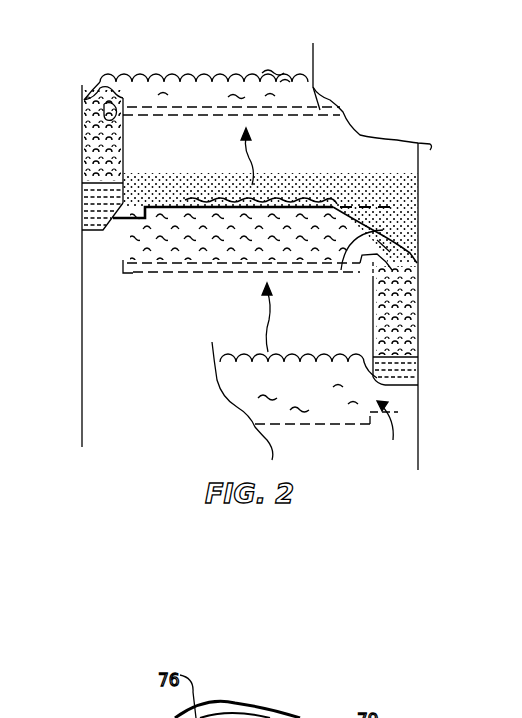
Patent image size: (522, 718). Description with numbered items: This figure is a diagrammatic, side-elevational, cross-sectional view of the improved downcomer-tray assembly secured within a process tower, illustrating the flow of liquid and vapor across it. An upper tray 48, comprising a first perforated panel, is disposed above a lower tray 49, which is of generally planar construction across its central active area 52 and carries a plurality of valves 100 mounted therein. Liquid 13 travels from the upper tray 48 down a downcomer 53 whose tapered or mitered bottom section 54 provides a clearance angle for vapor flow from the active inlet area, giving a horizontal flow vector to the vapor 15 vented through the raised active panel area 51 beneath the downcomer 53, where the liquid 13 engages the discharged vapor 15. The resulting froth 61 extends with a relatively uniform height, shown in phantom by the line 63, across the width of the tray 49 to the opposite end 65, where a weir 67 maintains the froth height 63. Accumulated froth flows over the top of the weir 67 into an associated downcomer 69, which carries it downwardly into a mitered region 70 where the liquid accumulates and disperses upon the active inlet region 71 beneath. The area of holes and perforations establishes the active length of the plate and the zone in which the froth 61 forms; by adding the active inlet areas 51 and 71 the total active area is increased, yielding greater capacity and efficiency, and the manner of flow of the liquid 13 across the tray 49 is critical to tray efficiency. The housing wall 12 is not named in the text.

The housing wall 12 is at (420, 183).
The liquid 13 is at (95, 207).
The vapor 15 is at (250, 148).
The upper tray 48 is at (322, 88).
The lower tray 49 is at (130, 273).
The raised active panel area 51 is at (113, 249).
The central active area 52 is at (168, 281).
The downcomer 53 is at (112, 100).
The tapered bottom section 54 is at (113, 208).
The froth 61 is at (276, 72).
The froth height line 63 is at (192, 197).
The opposite end 65 is at (385, 229).
The weir 67 is at (392, 259).
The associated downcomer 69 is at (373, 327).
The mitered region 70 is at (378, 388).
The active inlet region 71 is at (400, 412).
The valves 100 is at (190, 106).